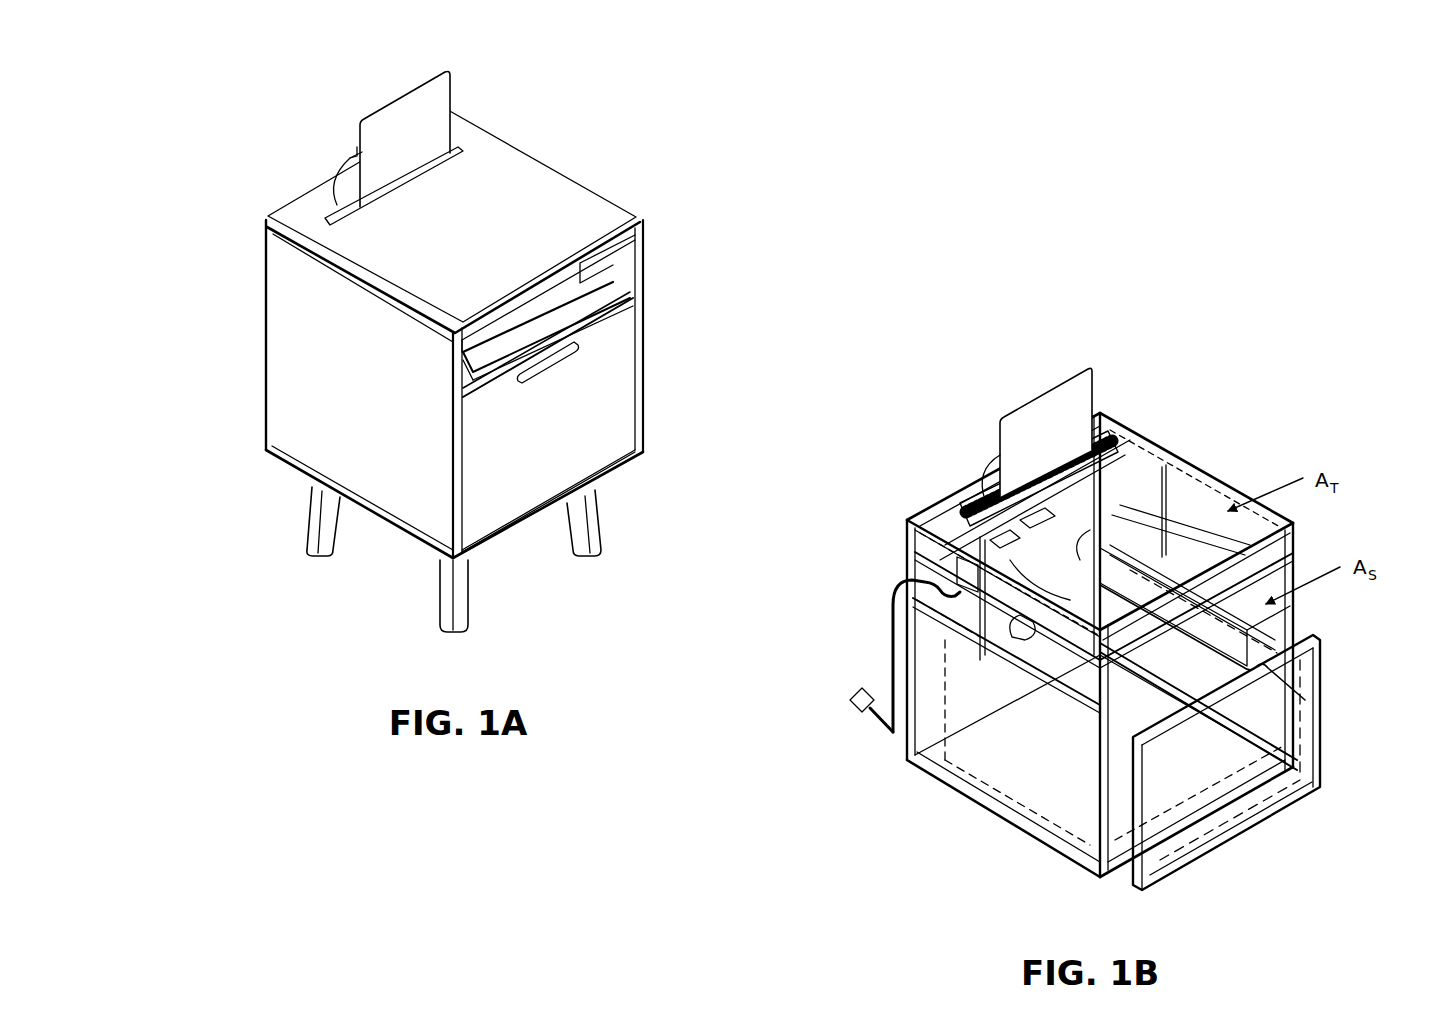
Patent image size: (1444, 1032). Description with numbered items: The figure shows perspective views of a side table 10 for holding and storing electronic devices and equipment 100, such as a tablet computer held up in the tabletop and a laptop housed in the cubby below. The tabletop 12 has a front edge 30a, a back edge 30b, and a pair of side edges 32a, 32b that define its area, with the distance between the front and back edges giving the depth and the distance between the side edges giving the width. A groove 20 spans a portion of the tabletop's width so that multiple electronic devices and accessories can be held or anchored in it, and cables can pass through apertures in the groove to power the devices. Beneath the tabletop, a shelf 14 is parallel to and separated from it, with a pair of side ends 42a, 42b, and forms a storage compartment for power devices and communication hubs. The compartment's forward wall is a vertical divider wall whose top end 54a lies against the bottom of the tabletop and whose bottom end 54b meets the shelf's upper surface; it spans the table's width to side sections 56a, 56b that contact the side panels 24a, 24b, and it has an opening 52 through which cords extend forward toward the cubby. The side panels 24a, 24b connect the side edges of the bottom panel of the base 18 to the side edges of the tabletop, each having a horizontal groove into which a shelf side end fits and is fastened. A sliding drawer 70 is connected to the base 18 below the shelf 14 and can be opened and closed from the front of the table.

In FIG. 1A, the side table 10 is at (270, 129).
In FIG. 1A, the tabletop 12 is at (548, 183).
In FIG. 1A, the shelf 14 is at (605, 305).
In FIG. 1A, the base 18 is at (262, 500).
In FIG. 1A, the groove 20 is at (323, 217).
In FIG. 1A, the side panel 24a is at (295, 378).
In FIG. 1A, the side panel 24b is at (613, 253).
In FIG. 1B, the front edge 30a is at (1287, 536).
In FIG. 1B, the back edge 30b is at (930, 507).
In FIG. 1B, the side edge 32a is at (940, 542).
In FIG. 1B, the side edge 32b is at (1283, 513).
In FIG. 1B, the side end 42a is at (1040, 587).
In FIG. 1B, the side end 42b is at (1112, 560).
In FIG. 1B, the opening 52 is at (1110, 563).
In FIG. 1B, the top end 54a is at (1123, 523).
In FIG. 1B, the bottom end 54b is at (1220, 513).
In FIG. 1B, the side section 56a is at (1067, 565).
In FIG. 1B, the side section 56b is at (1125, 545).
In FIG. 1A, the sliding drawer 70 is at (597, 403).
In FIG. 1B, the sliding drawer 70 is at (1253, 743).
In FIG. 1A, the electronic devices and equipment 100 is at (443, 117).
In FIG. 1B, the electronic devices and equipment 100 is at (1047, 413).